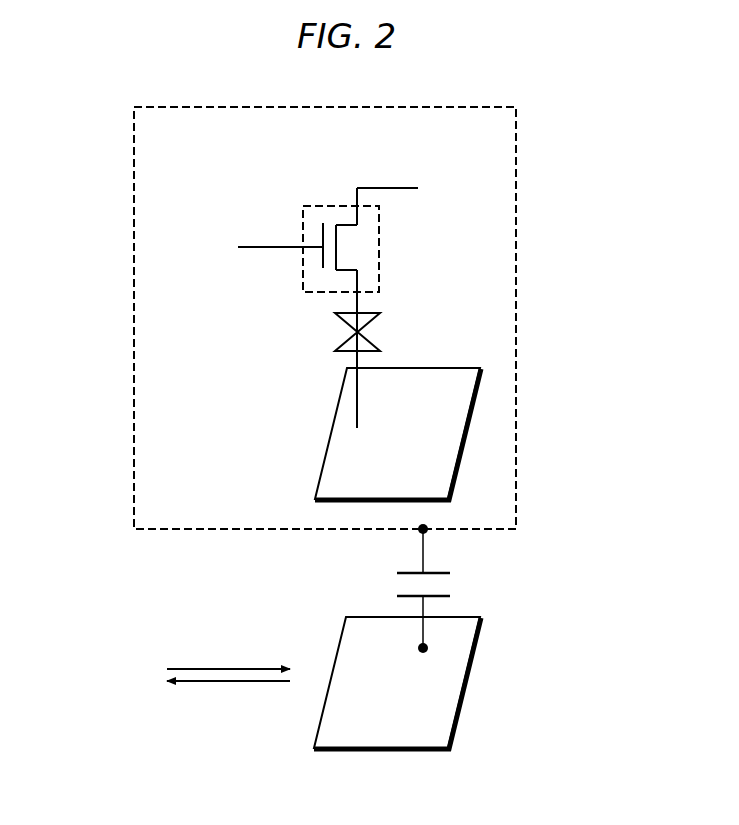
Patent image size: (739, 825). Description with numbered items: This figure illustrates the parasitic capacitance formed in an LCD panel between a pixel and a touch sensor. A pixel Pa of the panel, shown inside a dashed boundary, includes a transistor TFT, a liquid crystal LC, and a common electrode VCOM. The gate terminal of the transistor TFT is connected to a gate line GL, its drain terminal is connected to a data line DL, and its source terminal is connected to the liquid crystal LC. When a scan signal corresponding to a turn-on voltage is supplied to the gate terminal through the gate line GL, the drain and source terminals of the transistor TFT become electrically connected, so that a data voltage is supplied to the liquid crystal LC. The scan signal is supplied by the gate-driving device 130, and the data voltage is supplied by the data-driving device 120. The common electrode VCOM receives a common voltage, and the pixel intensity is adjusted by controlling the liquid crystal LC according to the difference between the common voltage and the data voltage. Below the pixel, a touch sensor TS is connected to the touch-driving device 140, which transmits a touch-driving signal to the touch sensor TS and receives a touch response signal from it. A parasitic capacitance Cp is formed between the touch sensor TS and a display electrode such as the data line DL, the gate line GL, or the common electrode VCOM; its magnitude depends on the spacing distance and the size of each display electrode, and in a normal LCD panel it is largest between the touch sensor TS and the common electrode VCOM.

The data-driving device 120 is at (495, 187).
The gate-driving device 130 is at (160, 248).
The touch-driving device 140 is at (184, 678).
The pixel Pa is at (189, 142).
The transistor TFT is at (308, 205).
The data line DL is at (379, 187).
The gate line GL is at (270, 250).
The liquid crystal LC is at (337, 350).
The common electrode VCOM is at (398, 425).
The parasitic capacitance Cp is at (449, 588).
The touch sensor TS is at (397, 683).